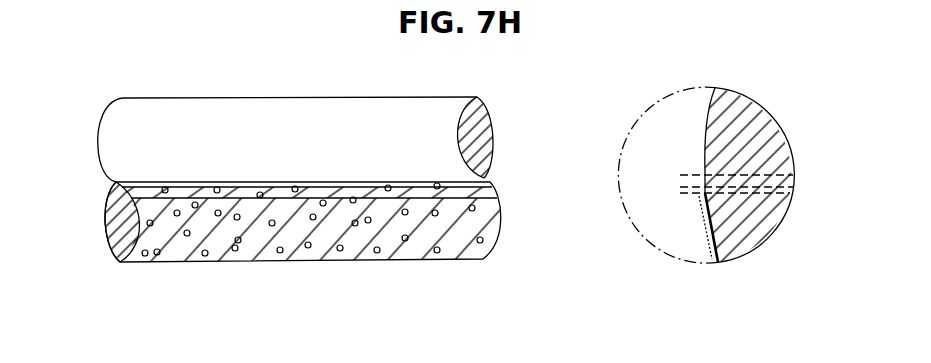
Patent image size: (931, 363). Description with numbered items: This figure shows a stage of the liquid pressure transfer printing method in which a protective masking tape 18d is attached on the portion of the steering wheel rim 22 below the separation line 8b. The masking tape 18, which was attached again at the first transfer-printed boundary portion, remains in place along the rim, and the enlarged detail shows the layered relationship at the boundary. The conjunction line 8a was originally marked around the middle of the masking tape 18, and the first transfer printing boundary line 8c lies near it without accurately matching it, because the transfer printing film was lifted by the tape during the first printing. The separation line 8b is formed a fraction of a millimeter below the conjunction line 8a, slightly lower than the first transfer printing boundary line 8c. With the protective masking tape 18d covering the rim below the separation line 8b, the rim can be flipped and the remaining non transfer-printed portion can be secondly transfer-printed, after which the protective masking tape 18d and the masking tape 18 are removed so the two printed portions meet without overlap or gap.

The conjunction line 8a is at (695, 174).
The separation line 8b is at (483, 178).
The first transfer printing boundary line 8c is at (383, 180).
The masking tape 18 is at (712, 205).
The protective masking tape 18d is at (355, 253).
The steering wheel rim 22 is at (772, 124).